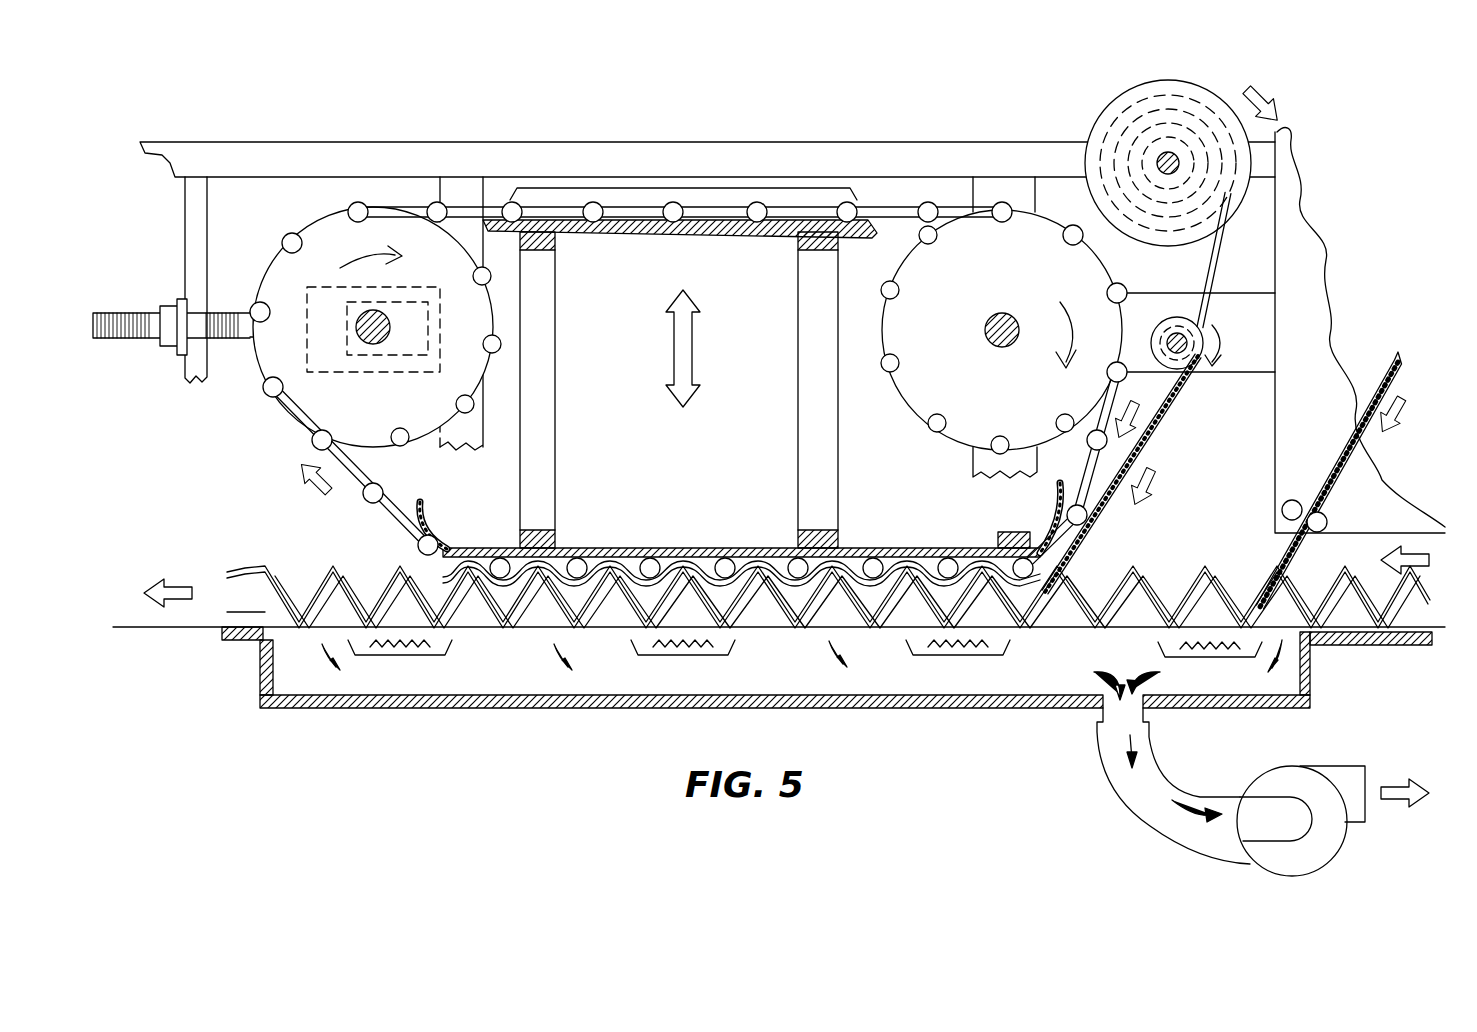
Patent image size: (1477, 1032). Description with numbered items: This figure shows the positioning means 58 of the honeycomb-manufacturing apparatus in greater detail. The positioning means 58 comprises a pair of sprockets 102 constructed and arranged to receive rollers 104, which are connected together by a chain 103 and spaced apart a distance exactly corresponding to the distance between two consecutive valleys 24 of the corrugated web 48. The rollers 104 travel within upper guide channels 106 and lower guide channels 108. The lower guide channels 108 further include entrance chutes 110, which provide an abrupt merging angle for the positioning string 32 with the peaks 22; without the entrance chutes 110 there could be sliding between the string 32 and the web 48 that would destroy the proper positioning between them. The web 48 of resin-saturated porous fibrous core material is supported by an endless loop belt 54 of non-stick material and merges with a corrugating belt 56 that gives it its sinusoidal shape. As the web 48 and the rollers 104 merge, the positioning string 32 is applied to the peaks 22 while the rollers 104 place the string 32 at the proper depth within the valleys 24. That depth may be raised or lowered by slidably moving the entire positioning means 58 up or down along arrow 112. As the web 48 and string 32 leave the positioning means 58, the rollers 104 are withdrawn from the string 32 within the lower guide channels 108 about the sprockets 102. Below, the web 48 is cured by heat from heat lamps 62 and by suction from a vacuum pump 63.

The positioning means 58 is at (708, 134).
The sprockets 102 is at (383, 412).
The rollers 104 is at (438, 204).
The upper guide channels 106 is at (596, 232).
The lower guide channels 108 is at (670, 548).
The arrow 112 is at (692, 367).
The chain 103 is at (410, 506).
The entrance chutes 110 is at (1058, 496).
The positioning string 32 is at (1160, 427).
The web 48 is at (1236, 593).
The peaks 22 is at (1068, 572).
The endless loop belt 54 is at (1168, 592).
The valleys 24 is at (1038, 628).
The corrugating belt 56 is at (1147, 626).
The heat lamps 62 is at (395, 657).
The vacuum pump 63 is at (1255, 868).